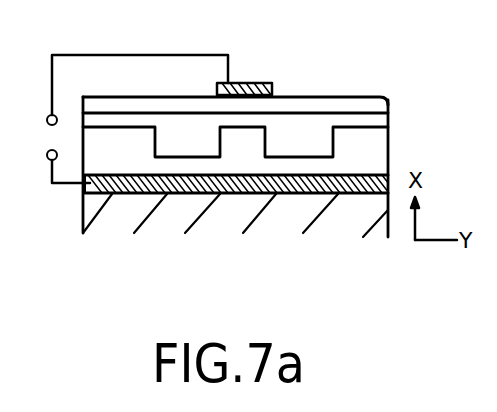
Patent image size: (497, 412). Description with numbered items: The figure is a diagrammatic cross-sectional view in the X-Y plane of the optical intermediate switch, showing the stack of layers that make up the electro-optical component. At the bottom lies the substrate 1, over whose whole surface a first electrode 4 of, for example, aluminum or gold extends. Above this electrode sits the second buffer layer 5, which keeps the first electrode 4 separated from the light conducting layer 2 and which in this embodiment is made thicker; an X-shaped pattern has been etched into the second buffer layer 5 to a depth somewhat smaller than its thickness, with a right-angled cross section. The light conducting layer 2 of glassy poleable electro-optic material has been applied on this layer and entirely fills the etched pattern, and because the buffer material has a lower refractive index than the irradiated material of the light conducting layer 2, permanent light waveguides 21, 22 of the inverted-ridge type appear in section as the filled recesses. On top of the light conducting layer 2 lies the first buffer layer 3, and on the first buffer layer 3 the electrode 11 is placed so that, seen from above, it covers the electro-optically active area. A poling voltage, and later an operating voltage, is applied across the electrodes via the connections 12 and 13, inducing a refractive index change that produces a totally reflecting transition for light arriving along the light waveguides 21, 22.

The substrate 1 is at (110, 220).
The light conducting layer 2 is at (382, 121).
The first buffer layer 3 is at (348, 97).
The first electrode 4 is at (85, 197).
The second buffer layer 5 is at (122, 145).
The electrode 11 is at (268, 82).
The connection 12 is at (57, 165).
The connection 13 is at (126, 91).
The light waveguide 21 is at (185, 145).
The light waveguide 22 is at (299, 147).